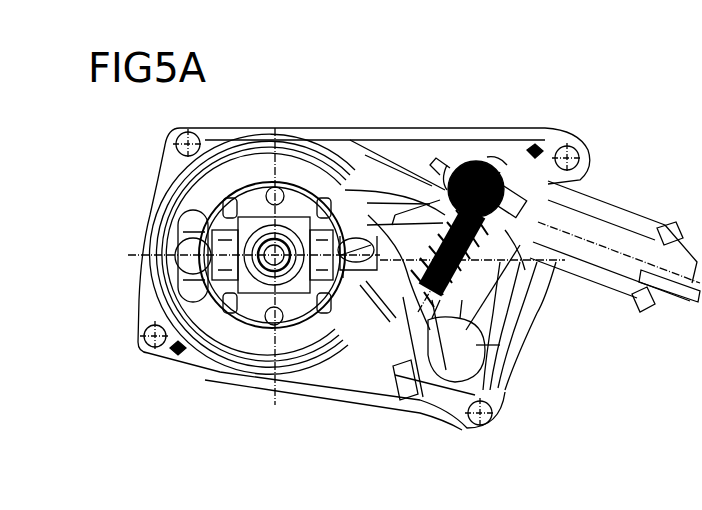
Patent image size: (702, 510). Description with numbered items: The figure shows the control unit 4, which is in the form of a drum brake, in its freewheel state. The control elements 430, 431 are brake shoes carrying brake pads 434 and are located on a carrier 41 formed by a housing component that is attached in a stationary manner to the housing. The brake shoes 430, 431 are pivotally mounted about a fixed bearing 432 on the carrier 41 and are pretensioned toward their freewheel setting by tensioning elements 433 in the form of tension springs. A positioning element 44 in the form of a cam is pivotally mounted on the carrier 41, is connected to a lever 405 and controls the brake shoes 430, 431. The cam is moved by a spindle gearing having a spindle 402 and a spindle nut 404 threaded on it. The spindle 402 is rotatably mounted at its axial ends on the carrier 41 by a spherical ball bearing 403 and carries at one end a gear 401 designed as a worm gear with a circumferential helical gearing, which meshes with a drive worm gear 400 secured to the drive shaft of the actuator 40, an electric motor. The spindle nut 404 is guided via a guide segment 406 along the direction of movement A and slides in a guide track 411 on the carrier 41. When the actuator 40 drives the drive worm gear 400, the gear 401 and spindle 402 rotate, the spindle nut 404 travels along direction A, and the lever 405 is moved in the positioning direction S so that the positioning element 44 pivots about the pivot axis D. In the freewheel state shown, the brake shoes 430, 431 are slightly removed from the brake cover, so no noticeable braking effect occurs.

The control unit 4 is at (553, 128).
The actuator 40 is at (633, 227).
The carrier 41 is at (256, 300).
The positioning element 44 is at (370, 230).
The drive worm gear 400 is at (470, 195).
The gear 401 is at (456, 180).
The spindle 402 is at (520, 285).
The spherical ball bearing 403 is at (478, 165).
The spindle nut 404 is at (490, 325).
The lever 405 is at (396, 240).
The guide segment 406 is at (495, 370).
The guide track 411 is at (505, 352).
The control element 430 is at (233, 332).
The control element 431 is at (306, 178).
The fixed bearing 432 is at (184, 258).
The tensioning element 433 is at (206, 318).
The brake pad 434 is at (284, 175).
The pivot axis D is at (354, 236).
The direction of movement A is at (625, 136).
The positioning direction S is at (577, 400).